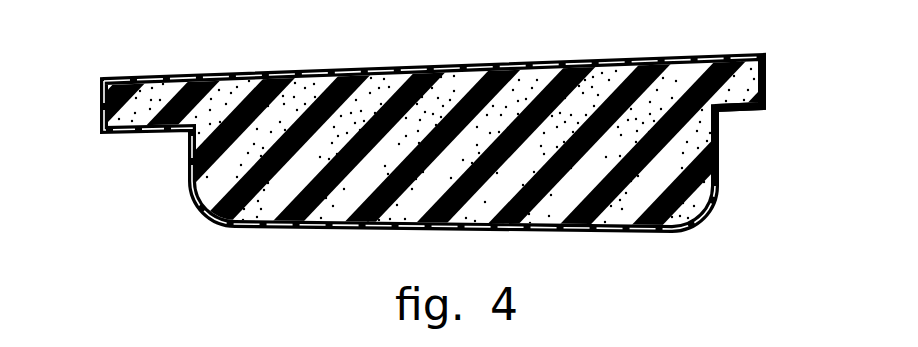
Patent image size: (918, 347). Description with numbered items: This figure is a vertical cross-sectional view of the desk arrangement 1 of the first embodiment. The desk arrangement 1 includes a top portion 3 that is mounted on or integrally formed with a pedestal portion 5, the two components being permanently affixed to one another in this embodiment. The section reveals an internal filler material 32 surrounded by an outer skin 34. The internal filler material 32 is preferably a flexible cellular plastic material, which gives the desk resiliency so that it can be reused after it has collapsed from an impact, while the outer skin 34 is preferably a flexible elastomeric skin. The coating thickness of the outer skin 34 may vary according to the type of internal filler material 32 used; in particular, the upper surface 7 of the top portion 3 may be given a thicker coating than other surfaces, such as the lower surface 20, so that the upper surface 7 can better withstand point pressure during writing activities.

The desk arrangement 1 is at (107, 78).
The top portion 3 is at (768, 70).
The pedestal portion 5 is at (720, 163).
The upper surface 7 is at (642, 60).
The lower surface 20 is at (663, 234).
The internal filler material 32 is at (377, 88).
The outer skin 34 is at (224, 74).